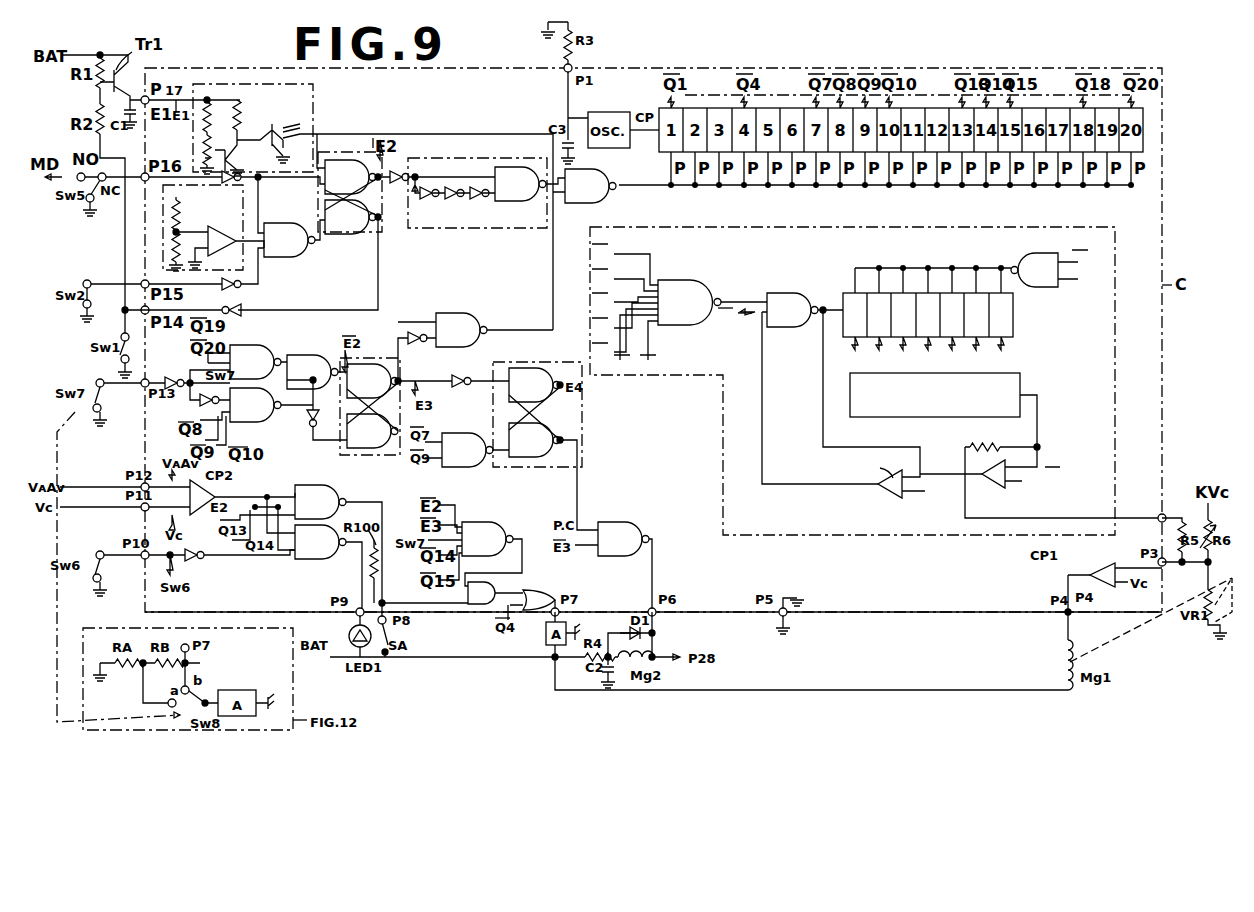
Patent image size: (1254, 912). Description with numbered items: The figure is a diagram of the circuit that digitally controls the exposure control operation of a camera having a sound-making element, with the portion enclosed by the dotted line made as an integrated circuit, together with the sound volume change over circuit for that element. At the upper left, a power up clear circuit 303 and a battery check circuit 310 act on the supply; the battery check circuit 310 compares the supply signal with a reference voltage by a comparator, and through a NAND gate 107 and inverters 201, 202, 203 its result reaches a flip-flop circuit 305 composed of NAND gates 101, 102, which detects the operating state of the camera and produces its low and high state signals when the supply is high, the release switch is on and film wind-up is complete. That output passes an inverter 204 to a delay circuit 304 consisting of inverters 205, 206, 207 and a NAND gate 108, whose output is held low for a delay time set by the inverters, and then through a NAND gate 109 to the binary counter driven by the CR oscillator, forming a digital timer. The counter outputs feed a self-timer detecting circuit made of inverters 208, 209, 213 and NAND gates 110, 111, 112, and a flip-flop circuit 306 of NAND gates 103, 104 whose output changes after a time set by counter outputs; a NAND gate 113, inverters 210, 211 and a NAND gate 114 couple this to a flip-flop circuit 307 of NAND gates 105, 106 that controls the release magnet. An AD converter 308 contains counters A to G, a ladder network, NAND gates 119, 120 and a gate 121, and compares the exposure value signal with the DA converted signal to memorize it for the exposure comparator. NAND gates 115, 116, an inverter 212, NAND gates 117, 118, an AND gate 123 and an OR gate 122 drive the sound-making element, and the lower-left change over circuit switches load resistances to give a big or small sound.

The NAND gate 101 is at (350, 177).
The NAND gate 102 is at (350, 217).
The NAND gate 103 is at (372, 381).
The NAND gate 104 is at (372, 431).
The NAND gate 105 is at (534, 385).
The NAND gate 106 is at (534, 440).
The NAND gate 107 is at (289, 240).
The NAND gate 108 is at (520, 184).
The NAND gate 109 is at (590, 186).
The NAND gate 110 is at (255, 362).
The NAND gate 111 is at (255, 405).
The NAND gate 112 is at (312, 372).
The NAND gate 113 is at (461, 330).
The NAND gate 114 is at (467, 450).
The NAND gate 115 is at (320, 502).
The NAND gate 116 is at (320, 542).
The NAND gate 117 is at (487, 539).
The NAND gate 118 is at (623, 539).
The NAND gate 119 is at (689, 302).
The NAND gate 120 is at (792, 310).
The NAND gate 121 is at (1034, 270).
The OR gate 122 is at (538, 596).
The AND gate 123 is at (478, 596).
The inverter 201 is at (234, 188).
The inverter 202 is at (215, 286).
The inverter 203 is at (243, 302).
The inverter 204 is at (398, 185).
The inverter 205 is at (442, 202).
The inverter 206 is at (450, 176).
The inverter 207 is at (487, 202).
The inverter 208 is at (173, 374).
The inverter 209 is at (198, 404).
The inverter 210 is at (421, 346).
The inverter 211 is at (458, 370).
The inverter 212 is at (193, 547).
The inverter 213 is at (302, 419).
The power up clear circuit 303 is at (313, 92).
The delay circuit 304 is at (465, 228).
The flip-flop circuit 305 is at (382, 226).
The flip-flop circuit 306 is at (372, 358).
The flip-flop circuit 307 is at (582, 418).
The AD converter 308 is at (800, 227).
The battery check circuit 310 is at (240, 222).